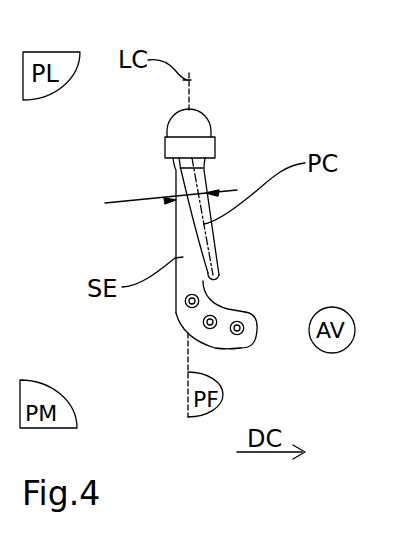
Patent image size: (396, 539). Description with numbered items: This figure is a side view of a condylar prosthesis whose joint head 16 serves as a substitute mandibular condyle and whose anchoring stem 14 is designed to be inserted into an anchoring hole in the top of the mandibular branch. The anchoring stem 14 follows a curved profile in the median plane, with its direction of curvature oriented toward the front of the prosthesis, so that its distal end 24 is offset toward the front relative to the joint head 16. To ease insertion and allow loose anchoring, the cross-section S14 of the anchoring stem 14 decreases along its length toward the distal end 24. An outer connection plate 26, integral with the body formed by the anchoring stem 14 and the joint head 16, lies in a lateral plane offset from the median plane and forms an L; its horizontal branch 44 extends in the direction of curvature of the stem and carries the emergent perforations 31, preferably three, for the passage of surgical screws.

The joint head 16 is at (207, 111).
The anchoring stem 14 is at (209, 247).
The distal end 24 is at (221, 276).
The outer connection plate 26 is at (177, 315).
The emergent perforations 31 is at (199, 300).
The horizontal branch 44 is at (245, 345).
The cross-section S14 is at (171, 192).